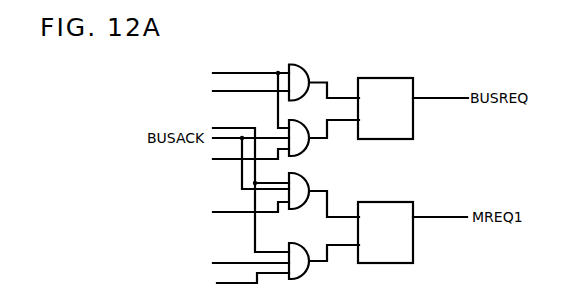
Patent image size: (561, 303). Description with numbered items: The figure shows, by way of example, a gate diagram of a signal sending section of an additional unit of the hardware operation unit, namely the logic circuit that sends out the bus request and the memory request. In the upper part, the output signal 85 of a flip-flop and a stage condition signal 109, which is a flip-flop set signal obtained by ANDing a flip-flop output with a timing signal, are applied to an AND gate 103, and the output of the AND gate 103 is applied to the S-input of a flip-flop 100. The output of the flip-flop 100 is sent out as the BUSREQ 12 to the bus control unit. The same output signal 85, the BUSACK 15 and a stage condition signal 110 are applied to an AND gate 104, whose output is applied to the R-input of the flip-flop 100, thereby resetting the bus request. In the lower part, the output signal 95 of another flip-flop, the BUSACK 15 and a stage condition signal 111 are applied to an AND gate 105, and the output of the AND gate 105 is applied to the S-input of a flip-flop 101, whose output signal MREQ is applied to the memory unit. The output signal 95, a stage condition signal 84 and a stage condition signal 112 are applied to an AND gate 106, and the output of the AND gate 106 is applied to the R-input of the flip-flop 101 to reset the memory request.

The output signal 85 is at (245, 73).
The stage condition signal 109 is at (232, 92).
The AND gate 103 is at (312, 58).
The flip-flop 100 is at (398, 78).
The BUSREQ 12 is at (448, 97).
The output signal 95 is at (259, 127).
The BUSACK 15 is at (240, 178).
The AND gate 104 is at (307, 145).
The stage condition signal 110 is at (219, 160).
The AND gate 105 is at (307, 182).
The flip-flop 101 is at (398, 202).
The stage condition signal 111 is at (228, 213).
The AND gate 106 is at (307, 247).
The stage condition signal 84 is at (240, 263).
The stage condition signal 112 is at (218, 283).